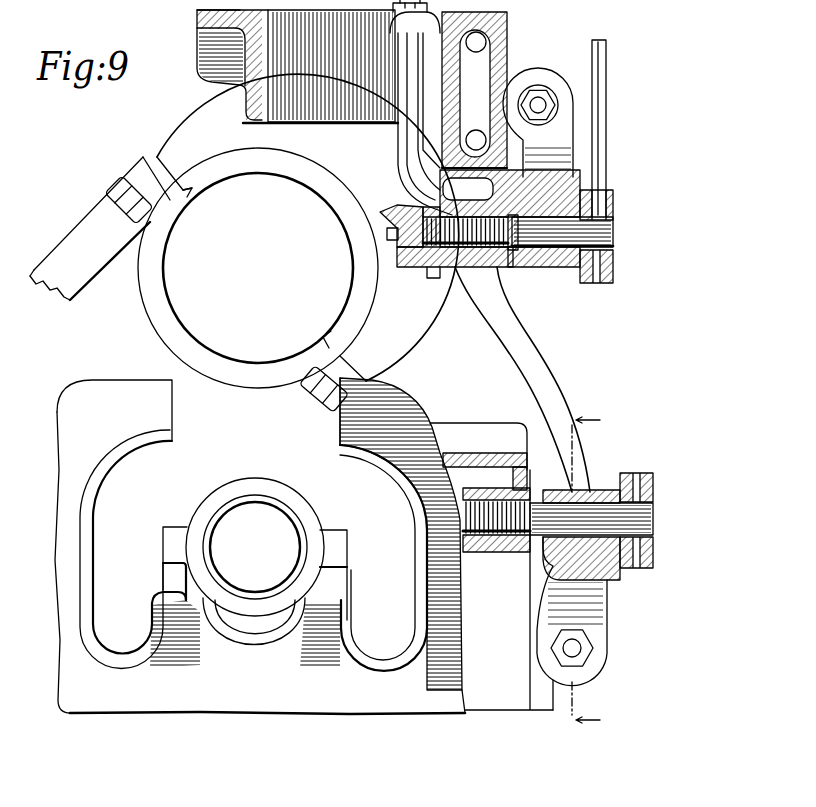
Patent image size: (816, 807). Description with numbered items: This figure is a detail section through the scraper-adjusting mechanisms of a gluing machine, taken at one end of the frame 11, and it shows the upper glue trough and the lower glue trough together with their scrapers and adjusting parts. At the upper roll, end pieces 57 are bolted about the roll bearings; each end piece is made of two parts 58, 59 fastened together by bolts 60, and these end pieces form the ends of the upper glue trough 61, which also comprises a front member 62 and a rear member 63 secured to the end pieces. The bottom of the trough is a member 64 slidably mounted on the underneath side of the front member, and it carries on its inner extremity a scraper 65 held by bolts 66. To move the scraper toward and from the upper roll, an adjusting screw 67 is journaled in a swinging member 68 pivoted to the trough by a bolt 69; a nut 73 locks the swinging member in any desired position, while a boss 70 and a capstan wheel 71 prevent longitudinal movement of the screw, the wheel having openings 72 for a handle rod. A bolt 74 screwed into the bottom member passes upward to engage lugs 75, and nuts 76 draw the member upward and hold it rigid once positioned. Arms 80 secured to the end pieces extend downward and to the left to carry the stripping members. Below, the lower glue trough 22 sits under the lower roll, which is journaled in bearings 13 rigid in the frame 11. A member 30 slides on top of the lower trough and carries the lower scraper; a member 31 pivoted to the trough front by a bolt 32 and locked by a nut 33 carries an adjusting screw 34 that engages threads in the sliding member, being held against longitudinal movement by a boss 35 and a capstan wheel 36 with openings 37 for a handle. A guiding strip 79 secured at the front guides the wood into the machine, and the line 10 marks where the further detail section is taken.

The section line 10 is at (581, 570).
The frame 11 is at (72, 410).
The bearings 13 is at (237, 600).
The glue trough 22 is at (508, 697).
The member 30 is at (490, 452).
The member 31 is at (590, 600).
The bolt 32 is at (582, 648).
The nut 33 is at (585, 660).
The adjusting screw 34 is at (510, 543).
The boss 35 is at (543, 490).
The capstan wheel 36 is at (655, 488).
The openings 37 is at (635, 560).
The end pieces 57 is at (190, 152).
The part 58 is at (192, 190).
The part 59 is at (155, 300).
The bolts 60 is at (318, 402).
The glue trough 61 is at (280, 88).
The front member 62 is at (502, 30).
The rear member 63 is at (197, 12).
The member 64 is at (473, 268).
The scraper 65 is at (385, 218).
The bolts 66 is at (392, 233).
The adjusting screw 67 is at (505, 268).
The swinging member 68 is at (547, 268).
The bolt 69 is at (540, 103).
The boss 70 is at (610, 207).
The capstan wheel 71 is at (613, 262).
The openings 72 is at (596, 285).
The nut 73 is at (592, 40).
The bolt 74 is at (410, 133).
The lugs 75 is at (408, 18).
The nuts 76 is at (393, 5).
The guiding strip 79 is at (447, 423).
The arms 80 is at (72, 240).